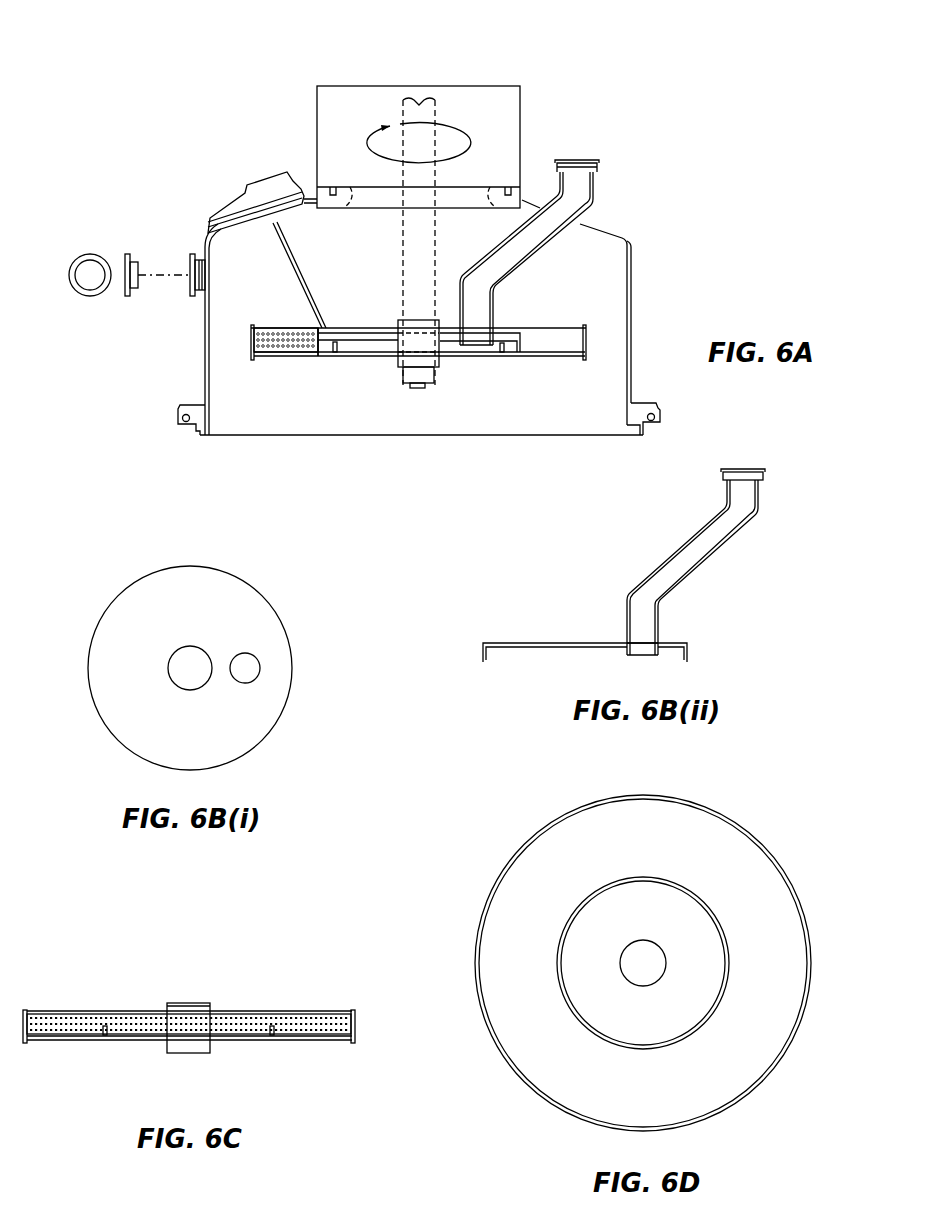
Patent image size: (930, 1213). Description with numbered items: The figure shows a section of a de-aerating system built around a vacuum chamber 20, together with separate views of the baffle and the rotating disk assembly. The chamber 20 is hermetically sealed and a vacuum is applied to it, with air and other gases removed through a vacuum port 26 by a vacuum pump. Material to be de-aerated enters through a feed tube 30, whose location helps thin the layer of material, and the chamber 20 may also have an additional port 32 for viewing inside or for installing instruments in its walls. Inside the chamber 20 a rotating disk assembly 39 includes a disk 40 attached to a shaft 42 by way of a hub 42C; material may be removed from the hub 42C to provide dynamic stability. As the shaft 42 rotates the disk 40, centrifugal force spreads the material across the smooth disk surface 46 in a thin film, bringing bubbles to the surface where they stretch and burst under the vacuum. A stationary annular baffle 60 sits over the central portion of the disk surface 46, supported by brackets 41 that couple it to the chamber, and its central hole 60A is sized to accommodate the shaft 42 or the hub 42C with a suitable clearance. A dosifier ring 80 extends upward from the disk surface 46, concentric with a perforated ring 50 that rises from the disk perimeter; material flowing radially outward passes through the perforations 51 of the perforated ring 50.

In FIG. 6A, the vacuum chamber 20 is at (600, 230).
In FIG. 6A, the vacuum port 26 is at (190, 268).
The feed tube 30 is at (737, 535).
In FIG. 6A, the additional port 32 is at (262, 175).
In FIG. 6A, the rotating disk assembly 39 is at (320, 362).
In FIG. 6A, the disk 40 is at (528, 367).
In FIG. 6A, the bracket 41 is at (313, 197).
In FIG. 6A, the shaft 42 is at (435, 113).
In FIG. 6A, the hub 42C is at (393, 370).
In FIG. 6A, the disk surface 46 is at (560, 350).
In FIG. 6C, the perforated ring 50 is at (253, 1012).
In FIG. 6D, the perforated ring 50 is at (533, 834).
In FIG. 6C, the perforations 51 is at (58, 1012).
In FIG. 6A, the annular baffle 60 is at (357, 328).
The central hole 60A is at (183, 662).
In FIG. 6C, the dosifier ring 80 is at (106, 1036).
In FIG. 6D, the dosifier ring 80 is at (717, 915).